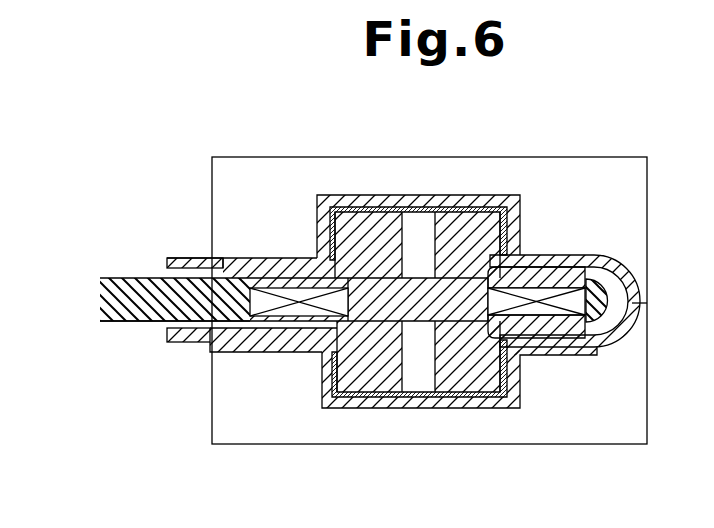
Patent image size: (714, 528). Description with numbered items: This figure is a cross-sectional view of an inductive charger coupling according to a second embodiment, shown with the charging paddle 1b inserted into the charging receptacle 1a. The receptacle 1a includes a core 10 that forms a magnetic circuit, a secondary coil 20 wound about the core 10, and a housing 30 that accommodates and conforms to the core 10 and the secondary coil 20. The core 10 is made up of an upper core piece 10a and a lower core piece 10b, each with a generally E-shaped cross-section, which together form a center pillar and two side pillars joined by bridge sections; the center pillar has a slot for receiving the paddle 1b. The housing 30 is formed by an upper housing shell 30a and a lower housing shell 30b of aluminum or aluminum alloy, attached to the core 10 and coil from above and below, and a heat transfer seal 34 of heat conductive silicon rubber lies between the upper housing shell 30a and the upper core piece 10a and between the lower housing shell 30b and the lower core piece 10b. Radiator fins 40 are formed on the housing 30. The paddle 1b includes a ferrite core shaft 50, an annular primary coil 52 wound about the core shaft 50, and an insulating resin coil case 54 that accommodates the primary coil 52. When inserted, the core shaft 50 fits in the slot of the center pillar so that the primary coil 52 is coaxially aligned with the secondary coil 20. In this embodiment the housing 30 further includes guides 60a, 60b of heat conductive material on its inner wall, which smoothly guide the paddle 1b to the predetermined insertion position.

The charging receptacle 1a is at (251, 155).
The charging paddle 1b is at (97, 300).
The core 10 is at (364, 408).
The upper core piece 10a is at (483, 217).
The lower core piece 10b is at (463, 367).
The secondary coil 20 is at (283, 338).
The housing 30 is at (228, 268).
The upper housing shell 30a is at (520, 233).
The lower housing shell 30b is at (522, 380).
The heat transfer seal 34 is at (412, 210).
The radiator fins 40 is at (598, 167).
The ferrite core shaft 50 is at (386, 292).
The primary coil 52 is at (302, 295).
The coil case 54 is at (127, 323).
The guide 60a is at (230, 260).
The guide 60b is at (236, 325).